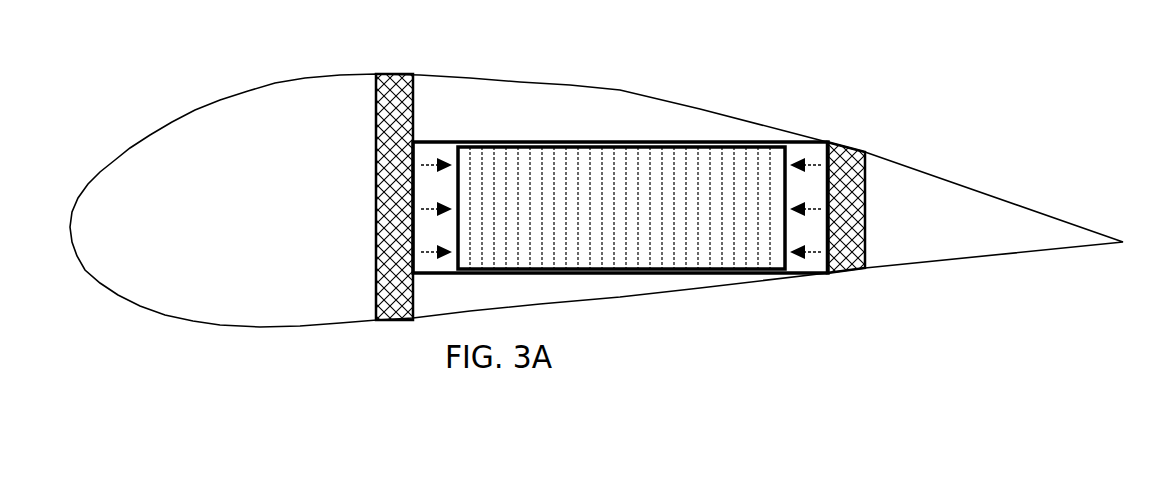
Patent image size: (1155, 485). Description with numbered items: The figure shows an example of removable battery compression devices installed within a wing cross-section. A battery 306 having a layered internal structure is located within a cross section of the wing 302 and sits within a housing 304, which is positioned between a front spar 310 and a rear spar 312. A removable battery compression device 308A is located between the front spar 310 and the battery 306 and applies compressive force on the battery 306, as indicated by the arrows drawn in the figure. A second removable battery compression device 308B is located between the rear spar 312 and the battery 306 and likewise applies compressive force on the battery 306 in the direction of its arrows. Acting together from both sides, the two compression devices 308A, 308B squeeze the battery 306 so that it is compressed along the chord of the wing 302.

The wing 302 is at (591, 85).
The housing 304 is at (505, 273).
The battery 306 is at (610, 158).
The removable battery compression device 308A is at (433, 157).
The removable battery compression device 308B is at (812, 150).
The front spar 310 is at (395, 73).
The rear spar 312 is at (865, 177).